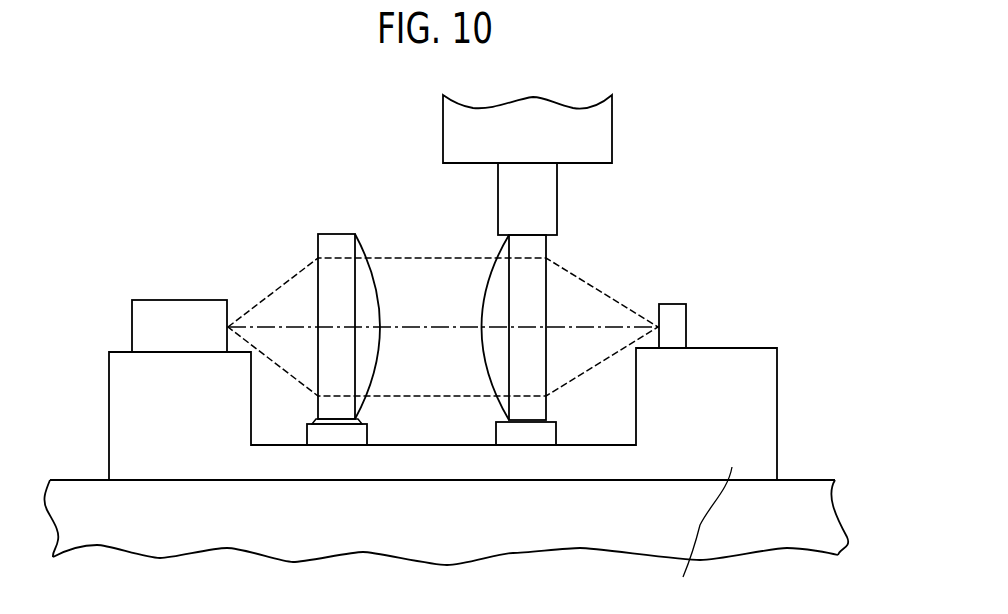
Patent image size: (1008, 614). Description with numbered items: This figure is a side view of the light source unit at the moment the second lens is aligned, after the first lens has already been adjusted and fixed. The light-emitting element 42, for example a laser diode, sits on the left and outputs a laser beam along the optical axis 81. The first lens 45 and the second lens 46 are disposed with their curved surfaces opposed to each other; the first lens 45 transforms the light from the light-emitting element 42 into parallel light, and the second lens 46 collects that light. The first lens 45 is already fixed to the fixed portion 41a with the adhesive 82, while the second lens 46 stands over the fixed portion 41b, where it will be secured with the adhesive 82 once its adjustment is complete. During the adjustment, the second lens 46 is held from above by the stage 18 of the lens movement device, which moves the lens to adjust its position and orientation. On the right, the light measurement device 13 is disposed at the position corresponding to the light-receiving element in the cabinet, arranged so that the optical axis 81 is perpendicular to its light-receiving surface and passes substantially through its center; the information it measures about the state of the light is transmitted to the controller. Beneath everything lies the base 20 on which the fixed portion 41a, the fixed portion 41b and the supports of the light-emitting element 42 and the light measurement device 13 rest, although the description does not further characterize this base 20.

The light receiving element 13 is at (671, 312).
The holder 18 is at (540, 197).
The base 20 is at (788, 540).
The lens mount 41a is at (333, 433).
The lens mount 41b is at (522, 433).
The light source 42 is at (153, 313).
The collimating lens 45 is at (332, 242).
The condensing lens 46 is at (532, 247).
The optical axis 81 is at (427, 325).
The adhesive 82 is at (345, 421).